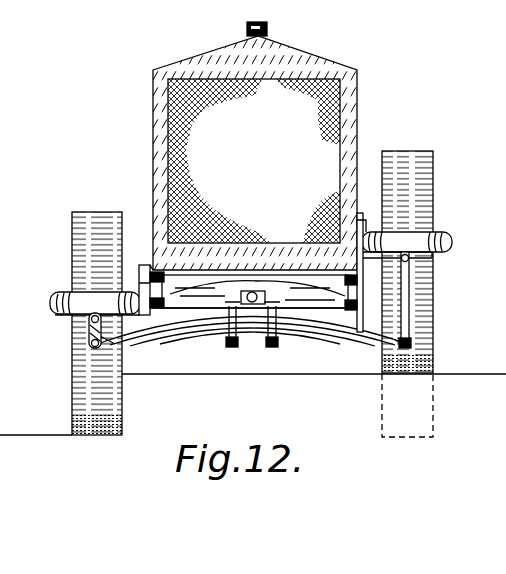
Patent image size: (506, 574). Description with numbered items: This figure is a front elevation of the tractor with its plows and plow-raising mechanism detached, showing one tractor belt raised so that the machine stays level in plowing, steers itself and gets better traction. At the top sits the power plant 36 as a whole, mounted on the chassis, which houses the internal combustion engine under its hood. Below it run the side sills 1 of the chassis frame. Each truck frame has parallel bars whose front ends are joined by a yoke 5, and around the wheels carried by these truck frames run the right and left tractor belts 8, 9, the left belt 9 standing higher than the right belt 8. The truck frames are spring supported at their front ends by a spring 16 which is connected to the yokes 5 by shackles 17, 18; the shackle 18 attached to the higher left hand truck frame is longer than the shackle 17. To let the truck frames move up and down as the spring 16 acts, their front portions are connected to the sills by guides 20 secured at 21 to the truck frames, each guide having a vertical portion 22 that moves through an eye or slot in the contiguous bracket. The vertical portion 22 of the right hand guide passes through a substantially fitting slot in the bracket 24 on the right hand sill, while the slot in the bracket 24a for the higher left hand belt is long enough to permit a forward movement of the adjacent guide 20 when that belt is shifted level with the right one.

The power plant 36 is at (193, 43).
The bracket 24a is at (316, 220).
The side sills 1 is at (254, 288).
The spring 16 is at (207, 318).
The bracket 24 is at (160, 322).
The right tractor belt 8 is at (92, 226).
The left tractor belt 9 is at (404, 160).
The yoke 5 is at (70, 296).
The shackle 17 is at (84, 328).
The shackle 18 is at (412, 293).
The securing point 21 is at (148, 268).
The guides 20 is at (140, 266).
The vertical portion 22 is at (138, 282).